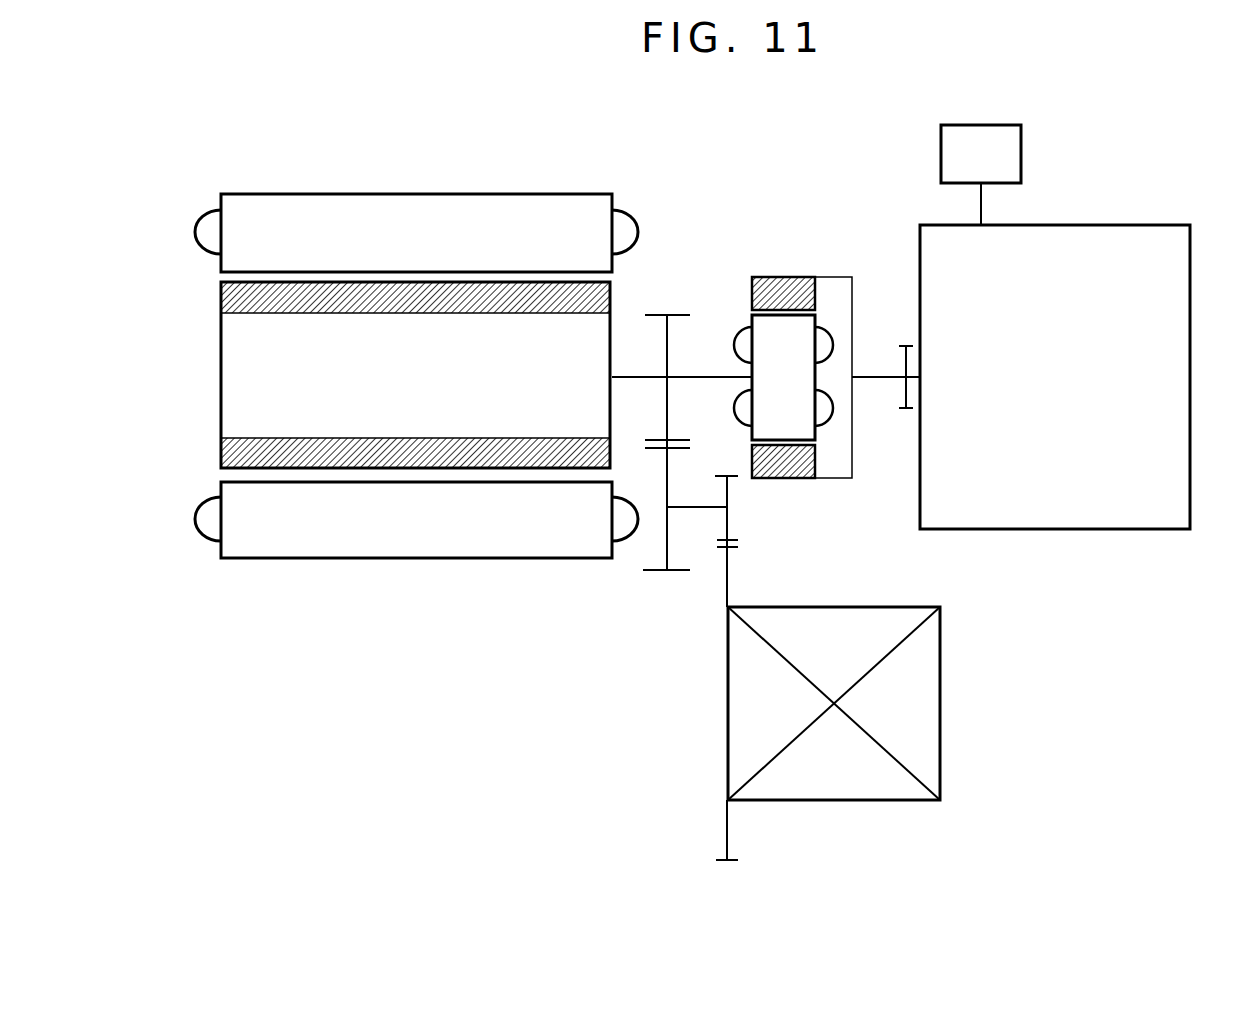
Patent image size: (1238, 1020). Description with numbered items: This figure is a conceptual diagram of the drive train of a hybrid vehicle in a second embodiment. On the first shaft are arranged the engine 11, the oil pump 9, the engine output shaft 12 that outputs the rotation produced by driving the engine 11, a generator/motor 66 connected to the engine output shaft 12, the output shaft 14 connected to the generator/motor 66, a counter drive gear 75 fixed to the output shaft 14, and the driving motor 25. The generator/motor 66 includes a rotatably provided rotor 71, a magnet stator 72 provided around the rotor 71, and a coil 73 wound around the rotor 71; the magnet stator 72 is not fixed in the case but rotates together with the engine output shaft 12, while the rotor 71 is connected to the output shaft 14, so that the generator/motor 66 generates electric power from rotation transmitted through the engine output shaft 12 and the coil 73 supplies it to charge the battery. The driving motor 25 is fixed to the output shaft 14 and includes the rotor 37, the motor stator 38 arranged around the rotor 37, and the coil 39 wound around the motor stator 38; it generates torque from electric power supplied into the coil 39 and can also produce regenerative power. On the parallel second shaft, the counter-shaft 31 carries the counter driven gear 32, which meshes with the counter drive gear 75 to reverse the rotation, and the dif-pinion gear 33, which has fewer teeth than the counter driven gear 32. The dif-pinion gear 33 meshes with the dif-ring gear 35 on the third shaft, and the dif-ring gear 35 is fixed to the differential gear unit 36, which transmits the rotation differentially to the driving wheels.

The oil pump 9 is at (970, 170).
The engine 11 is at (1120, 225).
The engine output shaft 12 is at (862, 377).
The output shaft 14 is at (700, 377).
The driving motor 25 is at (455, 190).
The counter-shaft 31 is at (692, 510).
The counter driven gear 32 is at (655, 575).
The dif-pinion gear 33 is at (733, 480).
The dif-ring gear 35 is at (727, 862).
The differential gear unit 36 is at (942, 700).
The rotor 37 is at (228, 375).
The motor stator 38 is at (305, 194).
The coil 39 is at (208, 220).
The generator/motor 66 is at (825, 195).
The rotor 71 is at (765, 425).
The magnet stator 72 is at (780, 277).
The coil 73 is at (832, 410).
The counter drive gear 75 is at (660, 312).